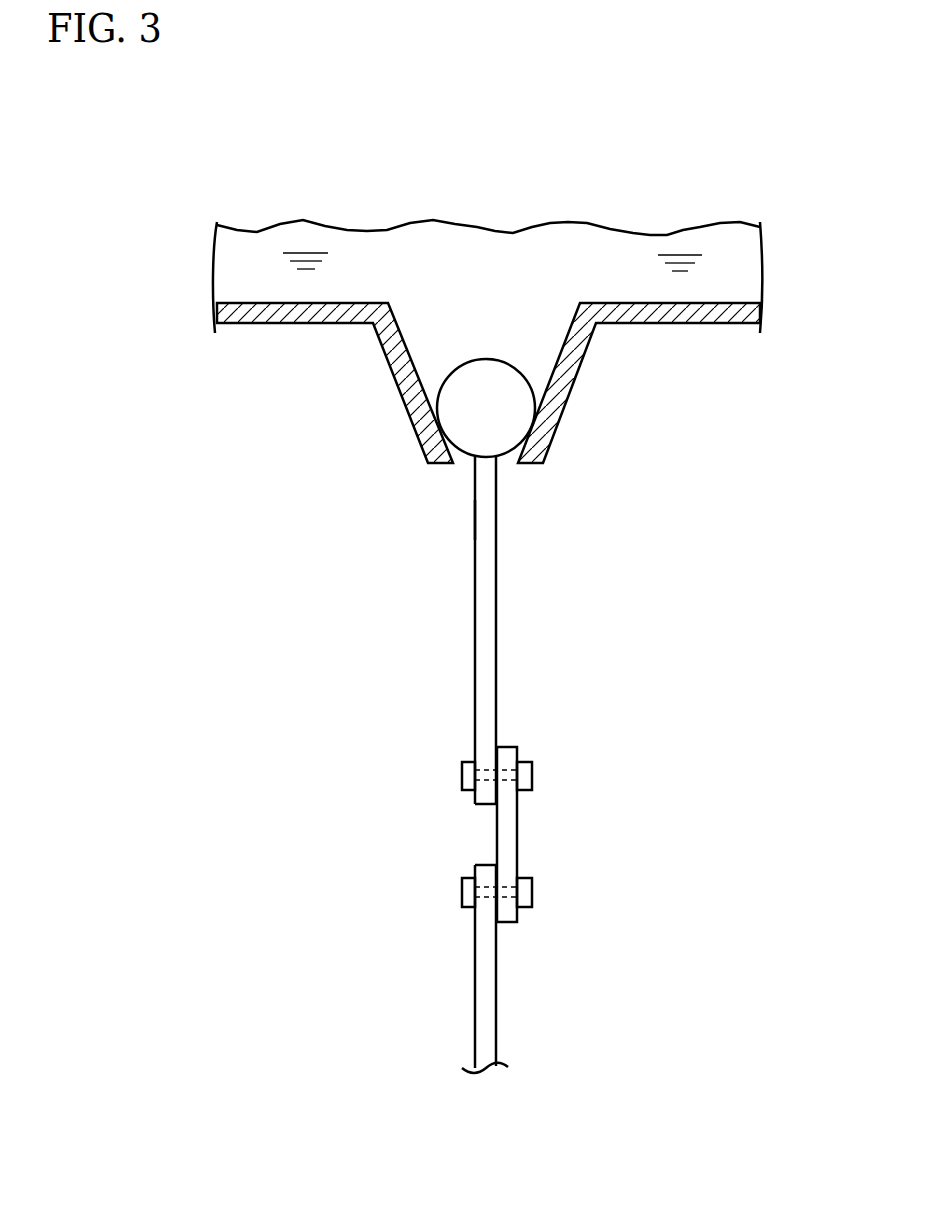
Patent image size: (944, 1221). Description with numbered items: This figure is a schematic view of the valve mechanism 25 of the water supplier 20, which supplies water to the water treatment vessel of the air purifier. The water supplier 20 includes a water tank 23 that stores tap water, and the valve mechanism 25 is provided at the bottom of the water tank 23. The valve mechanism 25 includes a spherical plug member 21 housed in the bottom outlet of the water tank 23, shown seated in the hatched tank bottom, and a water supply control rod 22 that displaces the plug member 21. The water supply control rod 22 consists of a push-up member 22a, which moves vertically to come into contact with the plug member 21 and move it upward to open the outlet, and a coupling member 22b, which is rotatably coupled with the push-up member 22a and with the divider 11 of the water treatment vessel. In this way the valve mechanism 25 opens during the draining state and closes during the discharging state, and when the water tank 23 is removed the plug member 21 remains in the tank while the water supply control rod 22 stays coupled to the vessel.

The water supplier 20 is at (205, 143).
The water tank 23 is at (688, 315).
The plug member 21 is at (505, 438).
The valve mechanism 25 is at (472, 521).
The push-up member 22a is at (487, 622).
The coupling member 22b is at (507, 828).
The water supply control rod 22 is at (508, 834).
The divider 11 is at (485, 983).